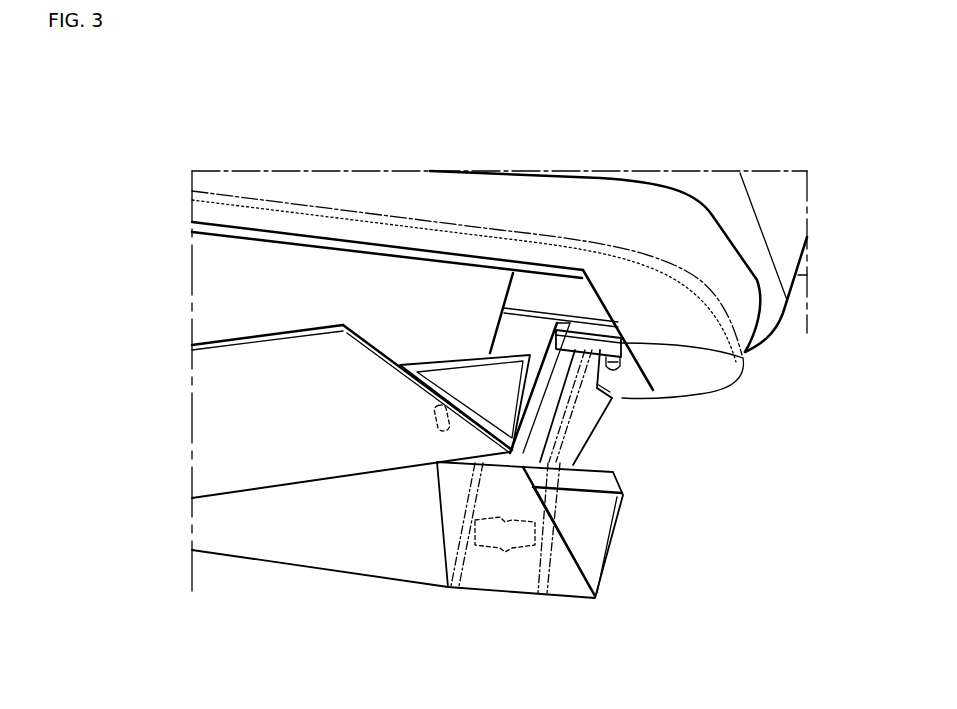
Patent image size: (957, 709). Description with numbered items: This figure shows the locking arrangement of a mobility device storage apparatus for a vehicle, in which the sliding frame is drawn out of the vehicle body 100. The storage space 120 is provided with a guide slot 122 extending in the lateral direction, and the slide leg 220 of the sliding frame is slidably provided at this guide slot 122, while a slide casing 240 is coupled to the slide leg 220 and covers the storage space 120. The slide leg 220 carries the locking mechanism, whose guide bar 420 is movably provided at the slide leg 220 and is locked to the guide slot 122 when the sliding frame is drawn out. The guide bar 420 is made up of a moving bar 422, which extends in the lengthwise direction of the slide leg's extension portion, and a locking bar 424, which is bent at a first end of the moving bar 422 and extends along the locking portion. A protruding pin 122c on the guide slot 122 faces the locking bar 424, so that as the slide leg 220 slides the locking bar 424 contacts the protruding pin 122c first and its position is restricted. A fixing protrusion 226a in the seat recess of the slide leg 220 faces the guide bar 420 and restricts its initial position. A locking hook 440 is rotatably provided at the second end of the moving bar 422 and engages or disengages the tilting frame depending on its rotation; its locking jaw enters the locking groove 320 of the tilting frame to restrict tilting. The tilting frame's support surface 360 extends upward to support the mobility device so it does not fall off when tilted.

The body 100 is at (597, 215).
The storage space 120 is at (422, 241).
The guide slot 122 is at (508, 290).
The protruding pin 122c is at (587, 378).
The slide leg 220 is at (679, 424).
The fixing protrusion 226a is at (600, 397).
The slide casing 240 is at (315, 537).
The locking groove 320 is at (441, 432).
The support surface 360 is at (223, 422).
The guide bar 420 is at (691, 498).
The moving bar 422 is at (543, 417).
The locking bar 424 is at (603, 347).
The locking hook 440 is at (505, 530).